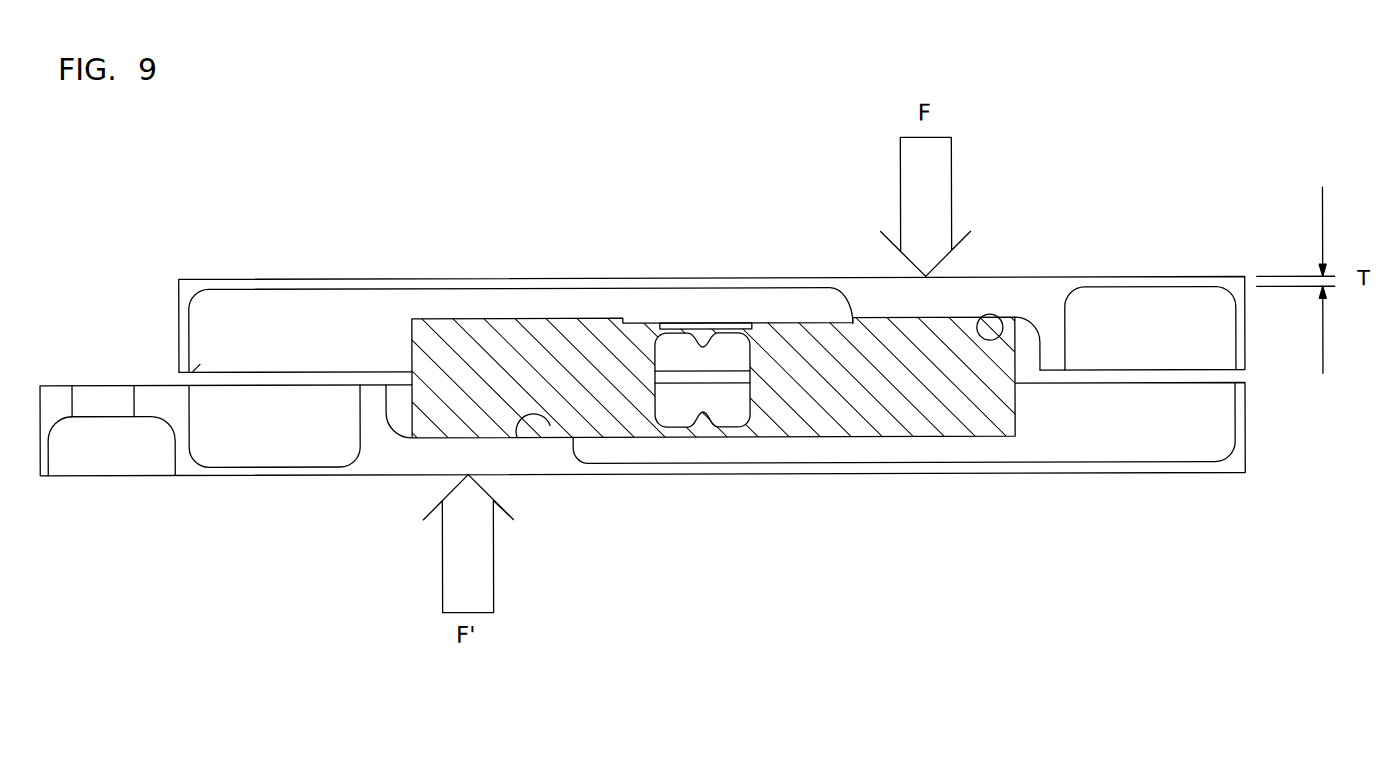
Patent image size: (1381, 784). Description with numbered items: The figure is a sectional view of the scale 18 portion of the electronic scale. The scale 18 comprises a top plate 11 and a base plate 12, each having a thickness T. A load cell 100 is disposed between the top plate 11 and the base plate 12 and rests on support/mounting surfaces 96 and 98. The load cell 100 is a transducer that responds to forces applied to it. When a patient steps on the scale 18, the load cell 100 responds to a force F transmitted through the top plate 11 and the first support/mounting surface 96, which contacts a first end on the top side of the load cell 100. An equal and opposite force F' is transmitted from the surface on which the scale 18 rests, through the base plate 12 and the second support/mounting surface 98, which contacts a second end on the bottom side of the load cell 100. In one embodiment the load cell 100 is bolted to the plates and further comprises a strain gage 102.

The scale 18 is at (258, 195).
The top plate 11 is at (257, 279).
The base plate 12 is at (1247, 394).
The load cell 100 is at (488, 371).
The strain gage 102 is at (698, 323).
The first support/mounting surface 96 is at (1012, 317).
The second support/mounting surface 98 is at (550, 425).